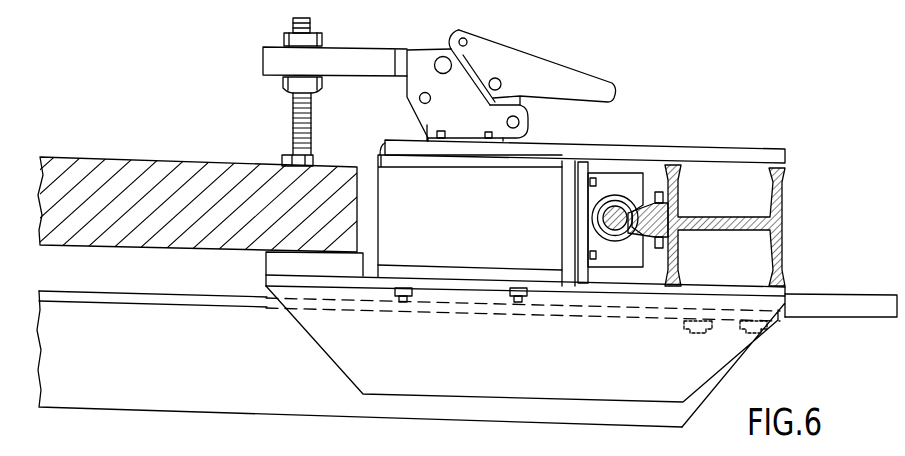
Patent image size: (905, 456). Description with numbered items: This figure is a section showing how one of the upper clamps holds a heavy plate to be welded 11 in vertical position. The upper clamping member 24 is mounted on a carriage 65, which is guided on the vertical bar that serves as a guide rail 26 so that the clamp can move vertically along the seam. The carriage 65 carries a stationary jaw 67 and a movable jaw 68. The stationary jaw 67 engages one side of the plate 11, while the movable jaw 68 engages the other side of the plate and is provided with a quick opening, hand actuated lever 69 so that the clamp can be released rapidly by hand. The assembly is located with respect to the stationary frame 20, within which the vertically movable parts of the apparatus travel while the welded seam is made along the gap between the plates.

The plate to be welded 11 is at (158, 166).
The stationary frame 20 is at (778, 228).
The upper clamping member 24 is at (352, 63).
The guide rail 26 is at (618, 208).
The carriage 65 is at (537, 190).
The stationary jaw 67 is at (272, 264).
The movable jaw 68 is at (296, 158).
The hand actuated lever 69 is at (552, 79).